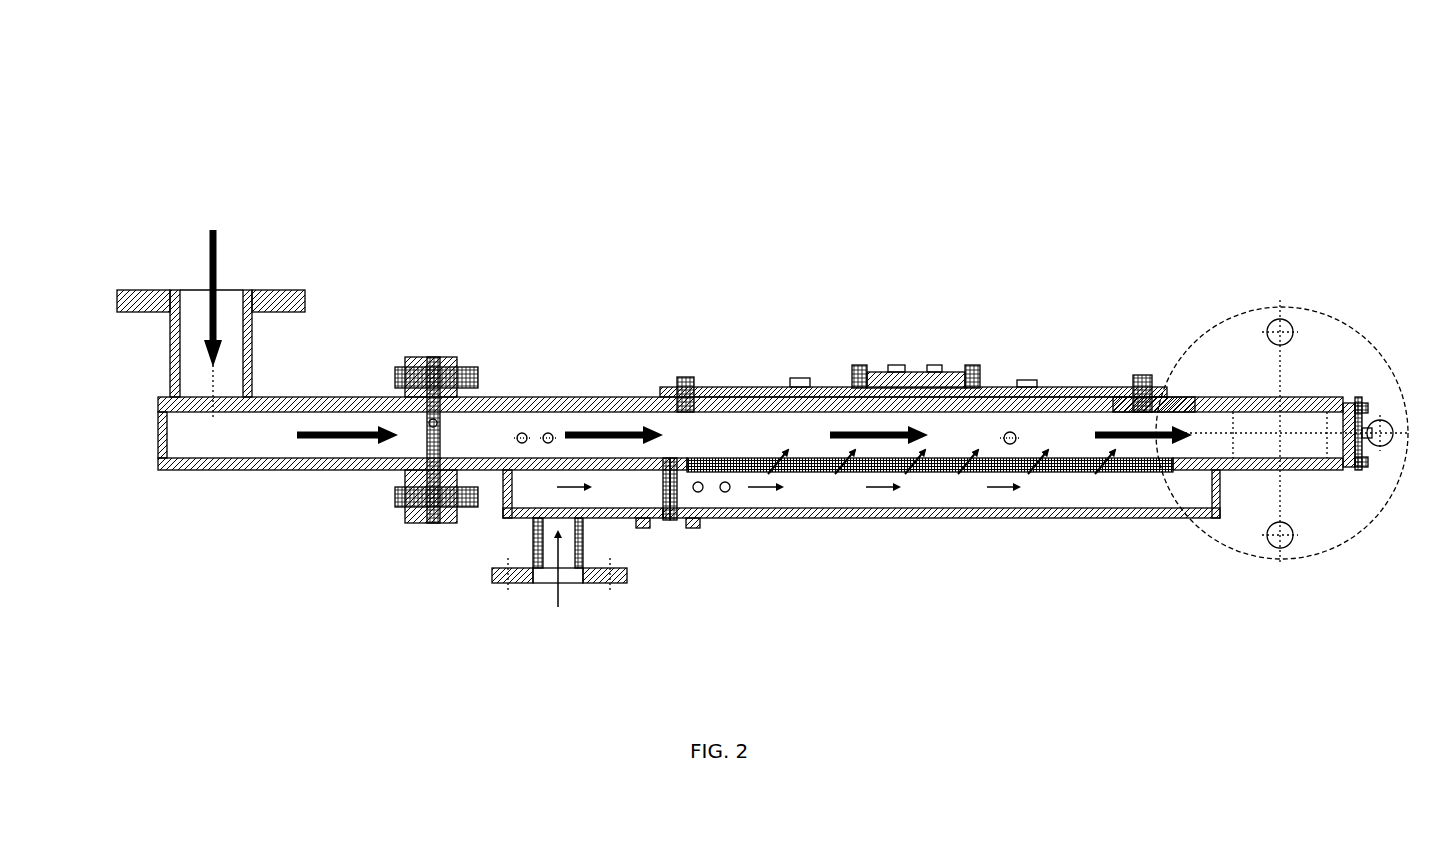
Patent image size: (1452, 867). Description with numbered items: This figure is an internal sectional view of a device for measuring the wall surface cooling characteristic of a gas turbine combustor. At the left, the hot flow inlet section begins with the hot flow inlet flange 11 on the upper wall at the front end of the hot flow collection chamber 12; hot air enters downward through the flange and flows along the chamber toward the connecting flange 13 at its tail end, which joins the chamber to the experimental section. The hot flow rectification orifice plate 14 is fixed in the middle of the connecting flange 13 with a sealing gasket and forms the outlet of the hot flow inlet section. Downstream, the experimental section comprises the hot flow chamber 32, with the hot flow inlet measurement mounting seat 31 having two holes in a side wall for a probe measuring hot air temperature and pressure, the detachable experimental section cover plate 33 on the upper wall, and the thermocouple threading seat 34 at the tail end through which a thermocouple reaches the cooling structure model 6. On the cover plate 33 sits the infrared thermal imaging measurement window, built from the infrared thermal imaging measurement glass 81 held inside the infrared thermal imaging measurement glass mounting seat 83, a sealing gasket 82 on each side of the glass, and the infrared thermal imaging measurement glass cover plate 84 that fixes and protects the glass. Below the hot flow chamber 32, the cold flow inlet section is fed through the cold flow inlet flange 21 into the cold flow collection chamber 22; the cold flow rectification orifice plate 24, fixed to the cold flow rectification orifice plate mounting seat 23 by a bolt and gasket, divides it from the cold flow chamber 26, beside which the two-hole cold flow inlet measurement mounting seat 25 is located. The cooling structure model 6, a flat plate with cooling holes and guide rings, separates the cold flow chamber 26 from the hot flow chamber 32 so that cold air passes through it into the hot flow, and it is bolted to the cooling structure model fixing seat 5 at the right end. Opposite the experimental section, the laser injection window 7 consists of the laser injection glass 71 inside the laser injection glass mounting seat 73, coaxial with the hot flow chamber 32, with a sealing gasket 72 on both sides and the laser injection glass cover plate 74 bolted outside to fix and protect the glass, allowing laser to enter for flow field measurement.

The hot flow inlet flange 11 is at (170, 293).
The hot flow collection chamber 12 is at (247, 438).
The connecting flange 13 is at (420, 357).
The hot flow rectification orifice plate 14 is at (433, 423).
The hot flow inlet measurement mounting seat 31 is at (532, 435).
The hot flow chamber 32 is at (700, 438).
The experimental section cover plate 33 is at (782, 388).
The thermocouple threading seat 34 is at (1012, 435).
The infrared thermal imaging measurement glass 81 is at (868, 390).
The sealing gasket 82 is at (877, 373).
The infrared thermal imaging measurement glass mounting seat 83 is at (898, 383).
The infrared thermal imaging measurement glass cover plate 84 is at (953, 370).
The cooling structure model fixing seat 5 is at (1193, 462).
The cooling structure model 6 is at (978, 460).
The laser injection window 7 is at (1362, 470).
The laser injection glass 71 is at (1350, 405).
The sealing gasket 72 is at (1357, 407).
The laser injection glass mounting seat 73 is at (1347, 467).
The laser injection glass cover plate 74 is at (1367, 405).
The cold flow inlet flange 21 is at (497, 575).
The cold flow collection chamber 22 is at (553, 495).
The cold flow rectification orifice plate mounting seat 23 is at (665, 498).
The cold flow rectification orifice plate 24 is at (669, 500).
The cold flow inlet measurement mounting seat 25 is at (712, 490).
The cold flow chamber 26 is at (868, 490).